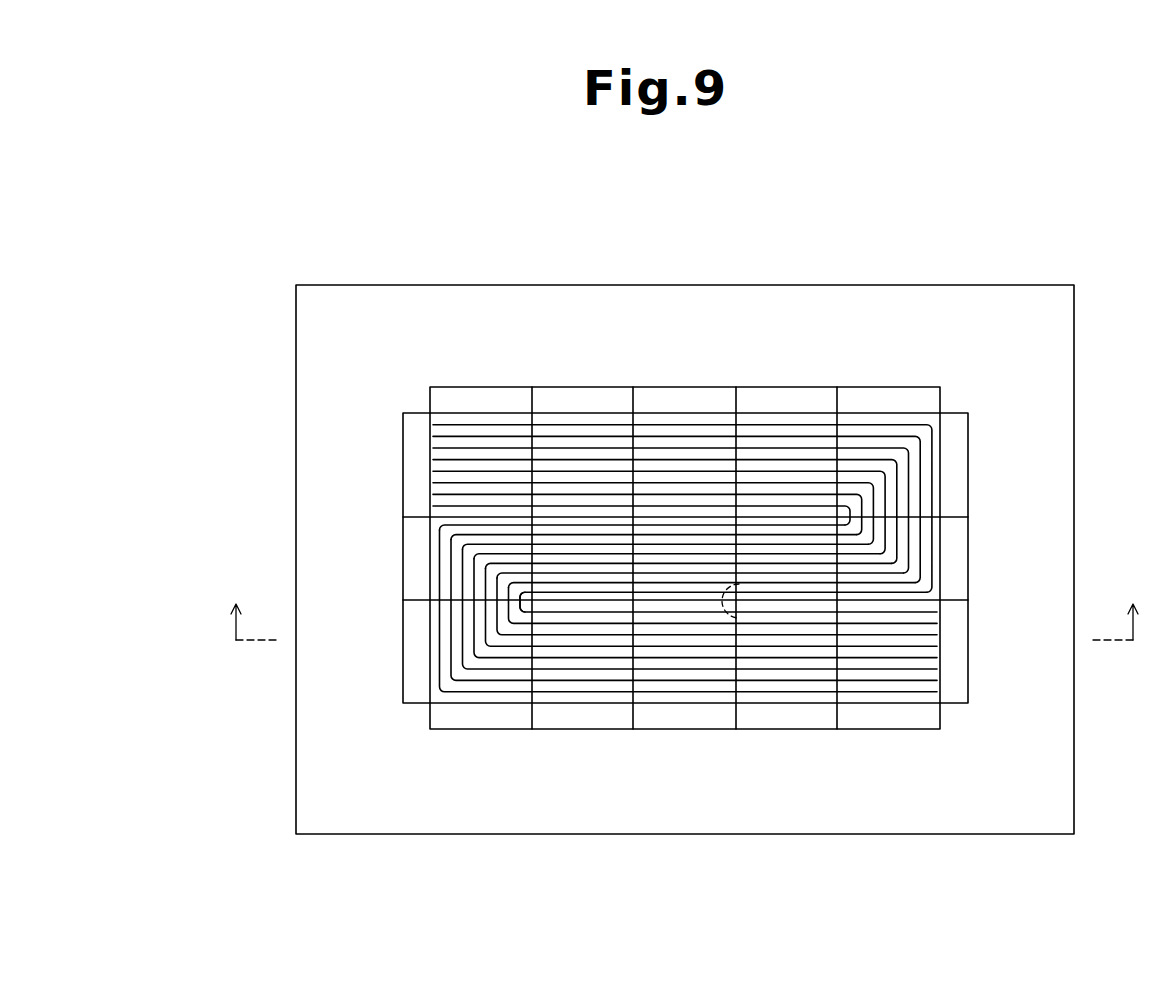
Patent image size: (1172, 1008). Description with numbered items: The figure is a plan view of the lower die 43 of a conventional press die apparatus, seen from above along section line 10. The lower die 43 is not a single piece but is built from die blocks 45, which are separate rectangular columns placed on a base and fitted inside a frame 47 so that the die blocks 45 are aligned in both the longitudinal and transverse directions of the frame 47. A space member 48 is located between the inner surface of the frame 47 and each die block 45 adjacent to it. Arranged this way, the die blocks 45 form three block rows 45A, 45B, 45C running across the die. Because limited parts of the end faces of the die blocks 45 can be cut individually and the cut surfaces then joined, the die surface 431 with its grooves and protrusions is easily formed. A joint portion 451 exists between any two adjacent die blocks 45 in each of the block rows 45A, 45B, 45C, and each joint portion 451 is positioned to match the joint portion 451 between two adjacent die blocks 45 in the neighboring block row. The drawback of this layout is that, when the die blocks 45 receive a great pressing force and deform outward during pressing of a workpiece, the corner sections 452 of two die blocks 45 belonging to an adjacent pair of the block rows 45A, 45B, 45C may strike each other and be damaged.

The cross-section line 10 is at (686, 605).
The lower die 43 is at (466, 404).
The die surface 431 is at (894, 423).
The die block 45 is at (607, 422).
The block row 45A is at (433, 464).
The block row 45B is at (437, 549).
The block row 45C is at (437, 634).
The joint portion 451 is at (529, 598).
The corner section 452 is at (757, 582).
The frame 47 is at (582, 291).
The space member 48 is at (507, 387).